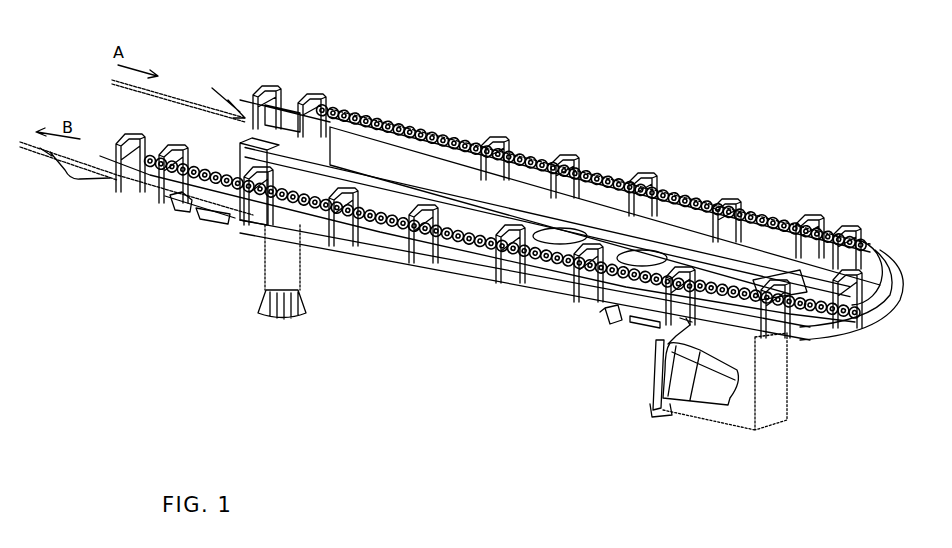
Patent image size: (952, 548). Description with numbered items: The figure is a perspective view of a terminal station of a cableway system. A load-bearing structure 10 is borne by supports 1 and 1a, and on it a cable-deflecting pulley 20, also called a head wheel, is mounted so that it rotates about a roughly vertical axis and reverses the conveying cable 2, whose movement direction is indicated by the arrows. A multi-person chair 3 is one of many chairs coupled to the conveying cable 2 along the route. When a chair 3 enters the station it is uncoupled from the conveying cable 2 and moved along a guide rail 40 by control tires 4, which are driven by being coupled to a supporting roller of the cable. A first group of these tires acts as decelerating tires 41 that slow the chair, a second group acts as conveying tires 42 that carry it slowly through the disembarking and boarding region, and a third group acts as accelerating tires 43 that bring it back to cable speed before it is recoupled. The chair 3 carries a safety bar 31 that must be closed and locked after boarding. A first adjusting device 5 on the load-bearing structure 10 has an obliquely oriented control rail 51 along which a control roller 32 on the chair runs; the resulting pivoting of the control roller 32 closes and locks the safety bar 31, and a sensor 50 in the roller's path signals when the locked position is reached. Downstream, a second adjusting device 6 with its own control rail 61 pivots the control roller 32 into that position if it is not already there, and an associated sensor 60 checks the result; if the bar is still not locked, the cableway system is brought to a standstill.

The support 1 is at (290, 278).
The support 1a is at (777, 397).
The conveying cable 2 is at (187, 100).
The chair 3 is at (677, 410).
The control tires 4 is at (560, 190).
The first adjusting device 5 is at (666, 384).
The second adjusting device 6 is at (136, 221).
The load-bearing structure 10 is at (501, 250).
The cable-deflecting pulley (head wheel) 20 is at (530, 293).
The safety bar 31 is at (656, 368).
The control roller 32 is at (670, 340).
The guide rail 40 is at (815, 327).
The decelerating tires 41 is at (530, 160).
The conveying tires 42 is at (690, 200).
The accelerating tires 43 is at (380, 223).
The sensor 50 is at (610, 316).
The control rail 51 is at (638, 323).
The sensor 60 is at (182, 207).
The control rail 61 is at (226, 220).